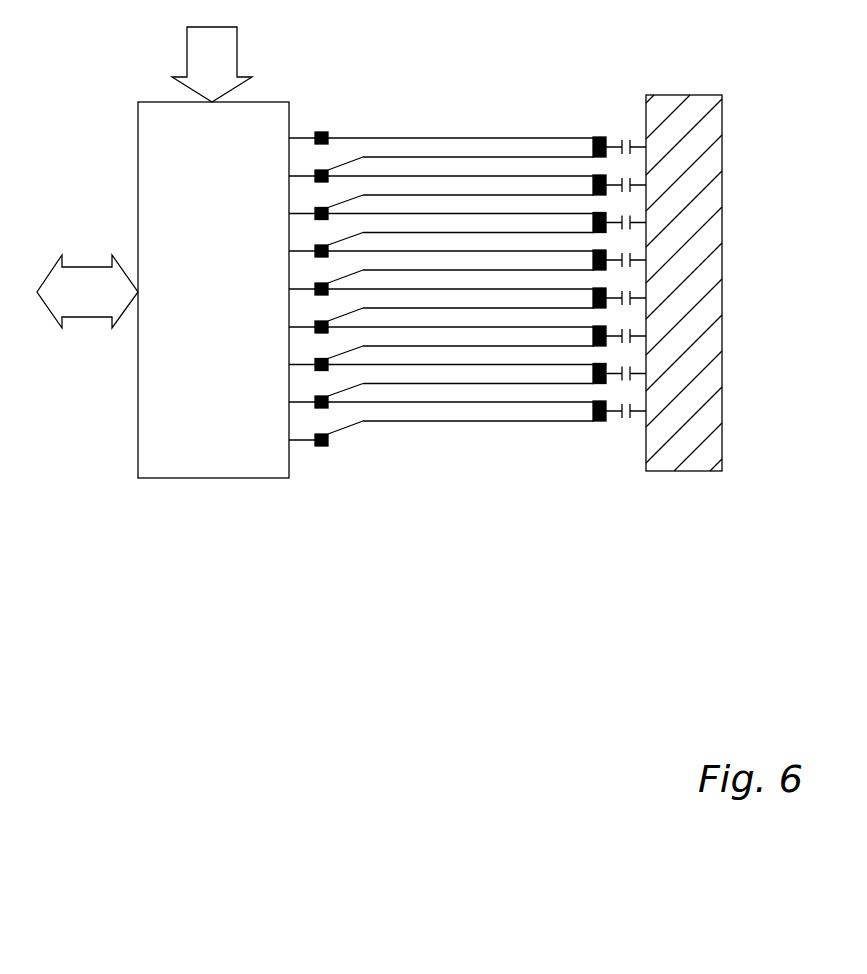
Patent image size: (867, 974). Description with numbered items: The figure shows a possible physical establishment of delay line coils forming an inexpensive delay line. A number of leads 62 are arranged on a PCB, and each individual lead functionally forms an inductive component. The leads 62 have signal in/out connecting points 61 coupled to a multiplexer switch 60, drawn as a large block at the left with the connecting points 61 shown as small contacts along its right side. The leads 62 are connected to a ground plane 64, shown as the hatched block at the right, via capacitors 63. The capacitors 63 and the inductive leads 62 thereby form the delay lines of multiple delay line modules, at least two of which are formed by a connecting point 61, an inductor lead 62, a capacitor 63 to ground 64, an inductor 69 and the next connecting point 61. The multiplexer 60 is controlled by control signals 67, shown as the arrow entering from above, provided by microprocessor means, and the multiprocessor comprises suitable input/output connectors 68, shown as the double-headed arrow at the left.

The multiplexer switch 60 is at (138, 443).
The connecting point 61 is at (323, 128).
The leads 62 is at (545, 325).
The capacitors 63 is at (634, 222).
The ground plane 64 is at (708, 471).
The control signals 67 is at (187, 46).
The input/output connectors 68 is at (85, 266).
The inductor 69 is at (466, 153).